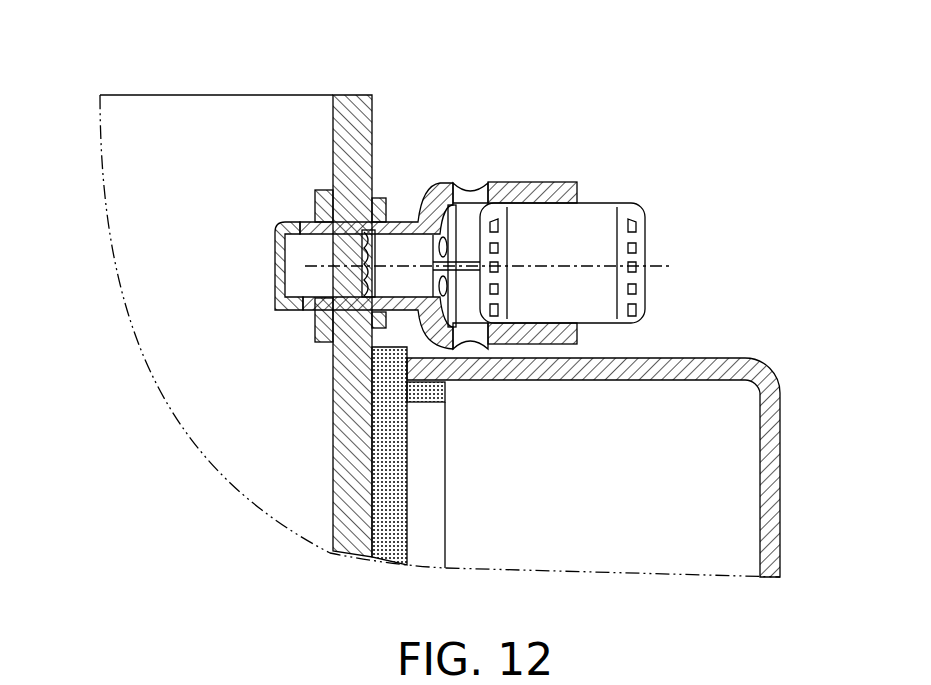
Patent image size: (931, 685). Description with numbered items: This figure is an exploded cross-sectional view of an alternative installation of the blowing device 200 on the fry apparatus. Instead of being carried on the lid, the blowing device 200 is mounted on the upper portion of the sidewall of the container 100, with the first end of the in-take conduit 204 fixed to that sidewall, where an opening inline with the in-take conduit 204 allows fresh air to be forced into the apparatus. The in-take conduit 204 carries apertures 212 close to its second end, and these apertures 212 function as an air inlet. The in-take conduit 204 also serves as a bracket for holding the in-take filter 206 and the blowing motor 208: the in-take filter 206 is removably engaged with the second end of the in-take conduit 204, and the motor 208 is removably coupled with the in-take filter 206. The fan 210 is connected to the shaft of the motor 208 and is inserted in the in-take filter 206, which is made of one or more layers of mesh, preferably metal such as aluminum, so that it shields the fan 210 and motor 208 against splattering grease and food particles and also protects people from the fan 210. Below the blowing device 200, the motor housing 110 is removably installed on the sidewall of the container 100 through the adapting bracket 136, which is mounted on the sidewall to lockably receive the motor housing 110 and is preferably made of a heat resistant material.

The container 100 is at (333, 138).
The motor housing 110 is at (770, 533).
The adapting bracket 136 is at (390, 482).
The blowing device 200 is at (602, 120).
The in-take conduit 204 is at (578, 192).
The in-take filter 206 is at (360, 258).
The blowing motor 208 is at (610, 285).
The fan 210 is at (424, 208).
The apertures 212 is at (484, 195).